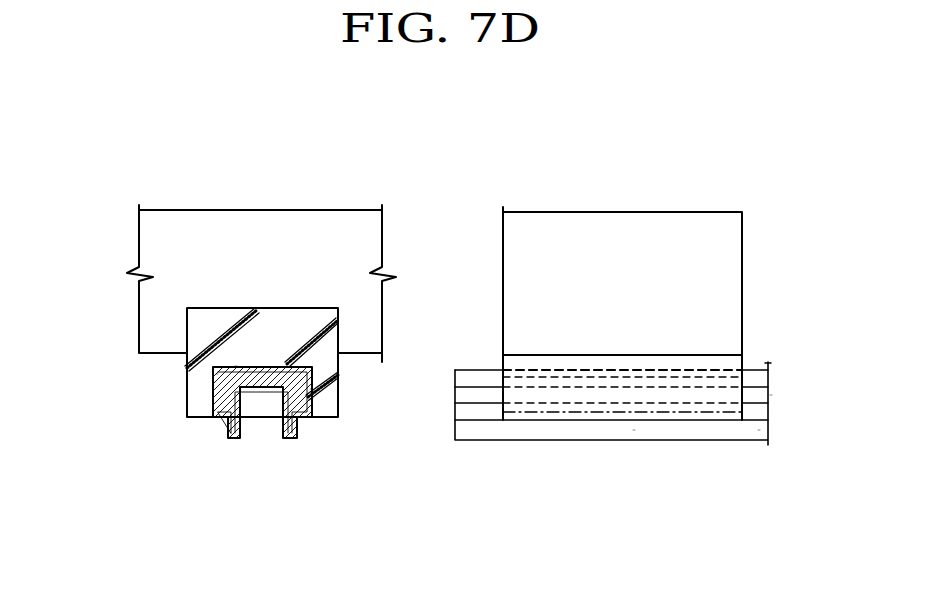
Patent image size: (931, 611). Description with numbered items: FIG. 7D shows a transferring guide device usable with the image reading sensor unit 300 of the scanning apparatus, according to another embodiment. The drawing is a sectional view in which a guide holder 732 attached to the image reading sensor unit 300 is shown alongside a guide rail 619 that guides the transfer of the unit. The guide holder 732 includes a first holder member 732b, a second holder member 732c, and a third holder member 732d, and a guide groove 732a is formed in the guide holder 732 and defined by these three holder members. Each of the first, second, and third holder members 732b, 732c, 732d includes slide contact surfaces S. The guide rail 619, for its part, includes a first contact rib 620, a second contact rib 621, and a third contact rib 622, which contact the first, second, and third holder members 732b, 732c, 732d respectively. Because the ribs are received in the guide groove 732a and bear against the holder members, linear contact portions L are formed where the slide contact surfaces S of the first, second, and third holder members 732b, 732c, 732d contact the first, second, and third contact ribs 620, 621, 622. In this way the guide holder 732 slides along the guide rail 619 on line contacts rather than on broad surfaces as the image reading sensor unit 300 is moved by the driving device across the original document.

The image reading sensor unit 300 is at (505, 211).
The guide holder 732 is at (497, 349).
The guide groove 732a is at (215, 358).
The first holder member 732b is at (283, 325).
The second holder member 732c is at (520, 390).
The third holder member 732d is at (197, 418).
The first contact rib 620 is at (270, 366).
The second contact rib 621 is at (470, 413).
The third contact rib 622 is at (213, 420).
The guide rail 619 is at (289, 448).
The slide contact surfaces S is at (235, 365).
The linear contact portions L is at (634, 430).